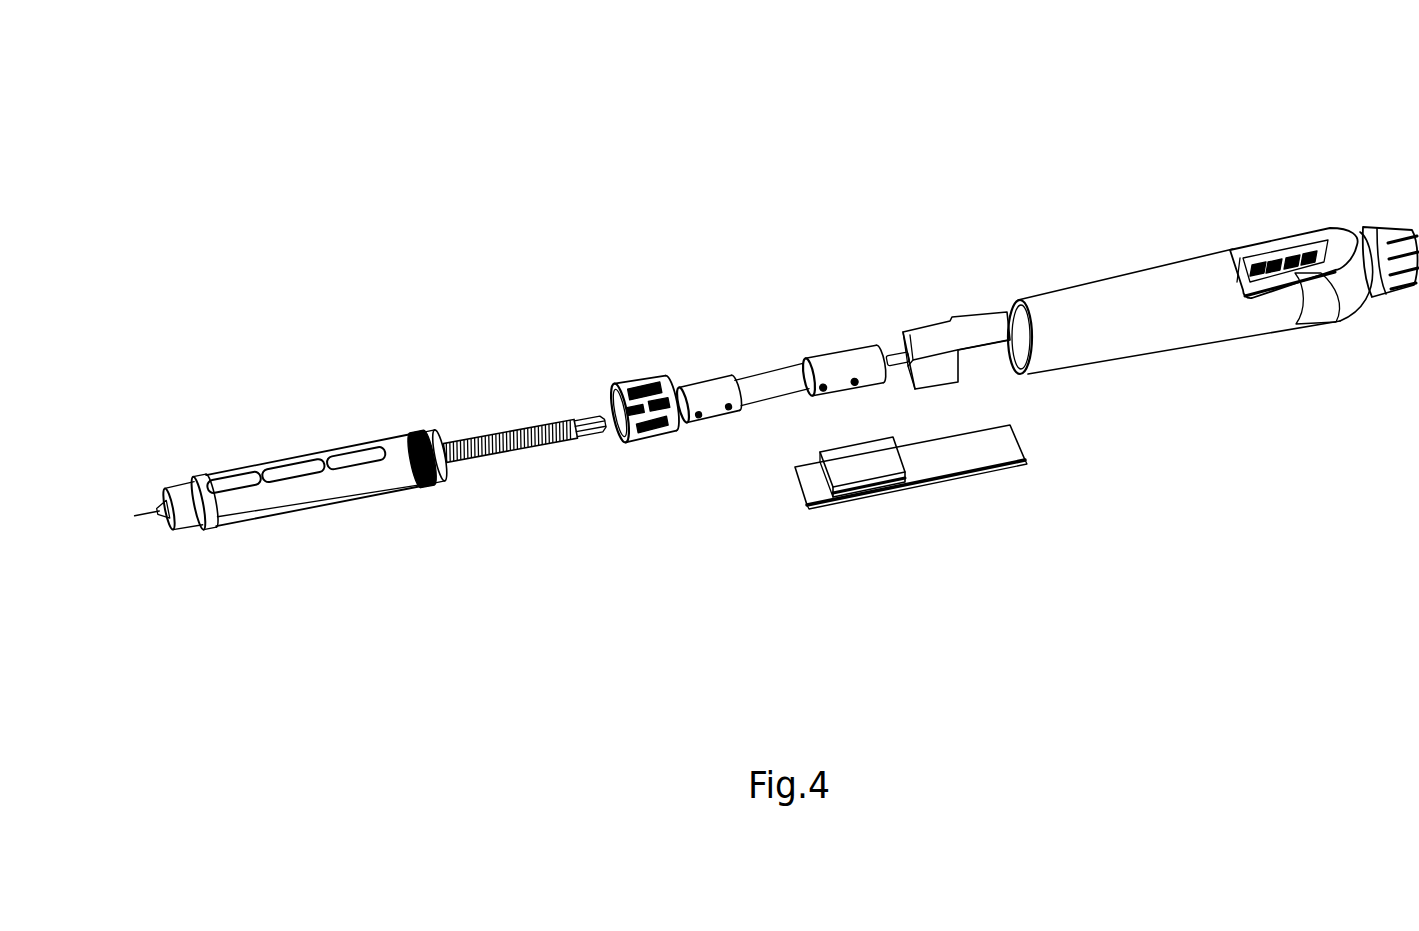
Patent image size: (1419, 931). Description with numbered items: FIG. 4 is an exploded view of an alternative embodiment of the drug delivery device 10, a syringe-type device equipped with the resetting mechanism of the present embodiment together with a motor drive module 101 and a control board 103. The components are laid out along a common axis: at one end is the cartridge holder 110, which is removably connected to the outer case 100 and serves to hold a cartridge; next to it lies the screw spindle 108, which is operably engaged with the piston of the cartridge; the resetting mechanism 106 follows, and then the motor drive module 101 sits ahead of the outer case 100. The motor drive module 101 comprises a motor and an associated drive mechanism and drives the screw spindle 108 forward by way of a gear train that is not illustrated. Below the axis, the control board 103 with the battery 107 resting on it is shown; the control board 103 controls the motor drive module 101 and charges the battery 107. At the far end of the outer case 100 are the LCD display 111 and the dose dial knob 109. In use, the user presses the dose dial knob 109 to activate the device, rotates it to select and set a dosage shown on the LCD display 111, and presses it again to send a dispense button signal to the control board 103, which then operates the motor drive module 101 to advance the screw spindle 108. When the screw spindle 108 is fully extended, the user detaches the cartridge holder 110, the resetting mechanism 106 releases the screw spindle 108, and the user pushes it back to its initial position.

The drug delivery device 10 is at (285, 178).
The outer case 100 is at (1135, 305).
The motor drive module 101 is at (930, 343).
The control board 103 is at (973, 450).
The resetting mechanism 106 is at (634, 385).
The battery 107 is at (866, 460).
The screw spindle 108 is at (526, 445).
The dose dial knob 109 is at (1393, 225).
The cartridge holder 110 is at (400, 455).
The LCD display 111 is at (1299, 233).